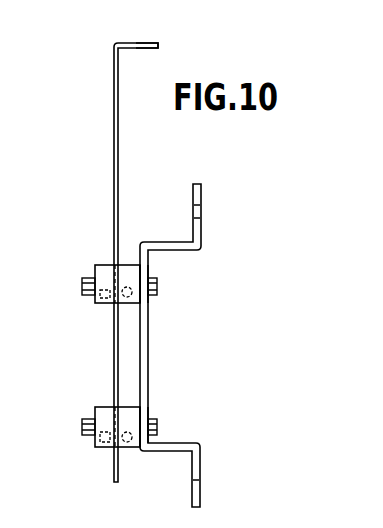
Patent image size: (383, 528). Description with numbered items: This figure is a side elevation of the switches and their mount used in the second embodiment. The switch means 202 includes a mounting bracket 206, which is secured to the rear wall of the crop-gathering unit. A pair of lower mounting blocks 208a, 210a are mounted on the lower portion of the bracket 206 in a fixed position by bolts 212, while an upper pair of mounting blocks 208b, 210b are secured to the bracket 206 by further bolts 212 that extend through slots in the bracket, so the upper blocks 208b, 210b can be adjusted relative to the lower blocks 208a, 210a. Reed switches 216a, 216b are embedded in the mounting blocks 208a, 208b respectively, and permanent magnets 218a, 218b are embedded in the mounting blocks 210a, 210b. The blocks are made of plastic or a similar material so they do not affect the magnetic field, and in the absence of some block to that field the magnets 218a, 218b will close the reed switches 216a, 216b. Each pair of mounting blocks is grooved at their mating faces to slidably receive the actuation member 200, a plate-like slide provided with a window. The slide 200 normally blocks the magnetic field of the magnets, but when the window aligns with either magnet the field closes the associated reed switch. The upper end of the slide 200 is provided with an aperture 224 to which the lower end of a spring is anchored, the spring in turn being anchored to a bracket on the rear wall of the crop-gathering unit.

The actuation member 200 is at (113, 124).
The aperture 224 is at (141, 42).
The switch means 202 is at (121, 273).
The mounting bracket 206 is at (202, 244).
The lower mounting block 208a is at (132, 417).
The upper mounting block 208b is at (135, 272).
The lower mounting block 210a is at (99, 409).
The upper mounting block 210b is at (97, 271).
The bolts 212 is at (82, 286).
The reed switch 216a is at (131, 448).
The reed switch 216b is at (141, 297).
The permanent magnet 218a is at (101, 447).
The permanent magnet 218b is at (96, 301).